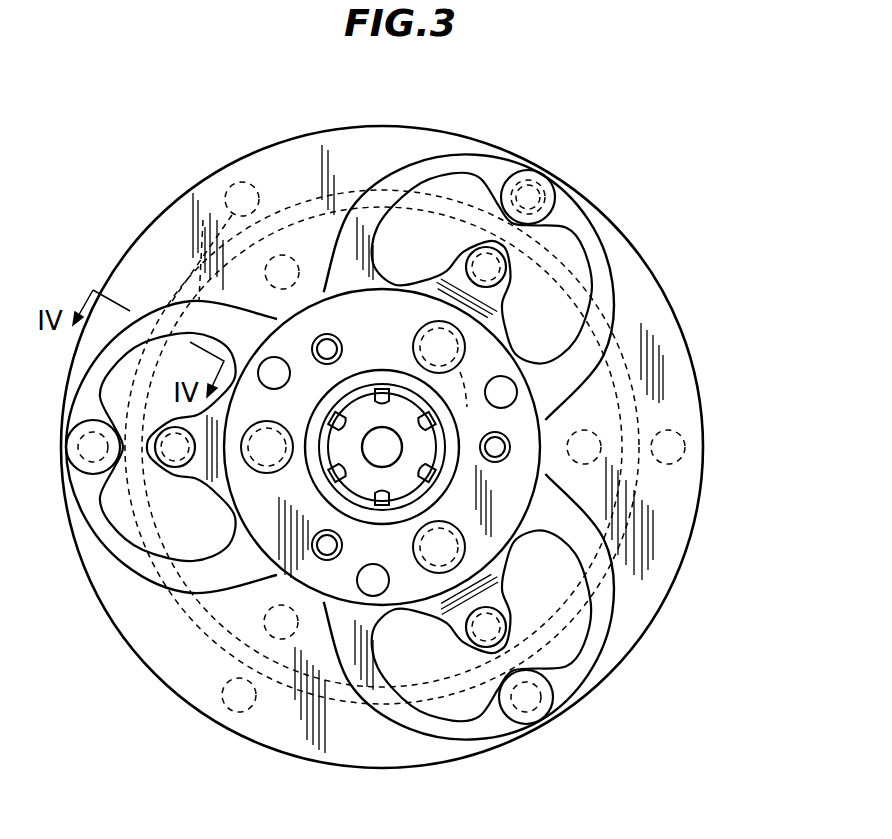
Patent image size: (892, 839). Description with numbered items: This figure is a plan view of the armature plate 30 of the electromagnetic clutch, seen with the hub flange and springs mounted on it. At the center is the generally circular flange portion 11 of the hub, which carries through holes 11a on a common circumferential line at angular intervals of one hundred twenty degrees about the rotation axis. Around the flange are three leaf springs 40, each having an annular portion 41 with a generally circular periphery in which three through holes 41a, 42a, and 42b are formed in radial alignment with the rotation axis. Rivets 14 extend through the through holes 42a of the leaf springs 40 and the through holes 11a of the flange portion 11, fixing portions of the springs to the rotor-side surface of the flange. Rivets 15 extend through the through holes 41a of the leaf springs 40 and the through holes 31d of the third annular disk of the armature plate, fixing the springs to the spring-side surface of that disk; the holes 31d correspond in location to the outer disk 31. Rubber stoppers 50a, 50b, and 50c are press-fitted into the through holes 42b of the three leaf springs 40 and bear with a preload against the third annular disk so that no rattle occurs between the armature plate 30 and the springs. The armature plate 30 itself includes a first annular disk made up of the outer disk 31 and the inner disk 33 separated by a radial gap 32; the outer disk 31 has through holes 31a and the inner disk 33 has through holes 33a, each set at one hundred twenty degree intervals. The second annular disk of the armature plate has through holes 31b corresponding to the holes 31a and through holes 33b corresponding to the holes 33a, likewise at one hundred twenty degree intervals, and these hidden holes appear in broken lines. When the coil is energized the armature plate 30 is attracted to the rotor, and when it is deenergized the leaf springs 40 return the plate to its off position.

The flange portion 11 is at (292, 580).
The through holes 11a is at (413, 447).
The rivets 14 is at (412, 346).
The rivets 15 is at (557, 200).
The armature plate 30 is at (410, 447).
The outer disk 31 is at (690, 352).
The through holes 31a is at (248, 182).
The through holes 31b is at (230, 192).
The through holes 31d is at (535, 172).
The radial gap 32 is at (636, 412).
The inner disk 33 is at (609, 508).
The through holes 33a is at (297, 258).
The through holes 33b is at (212, 222).
The leaf springs 40 is at (616, 258).
The annular portion 41 is at (619, 312).
The through hole 41a is at (520, 176).
The through hole 42a is at (420, 330).
The through hole 42b is at (468, 262).
The rubber stopper 50a is at (468, 650).
The rubber stopper 50b is at (500, 283).
The rubber stopper 50c is at (192, 463).